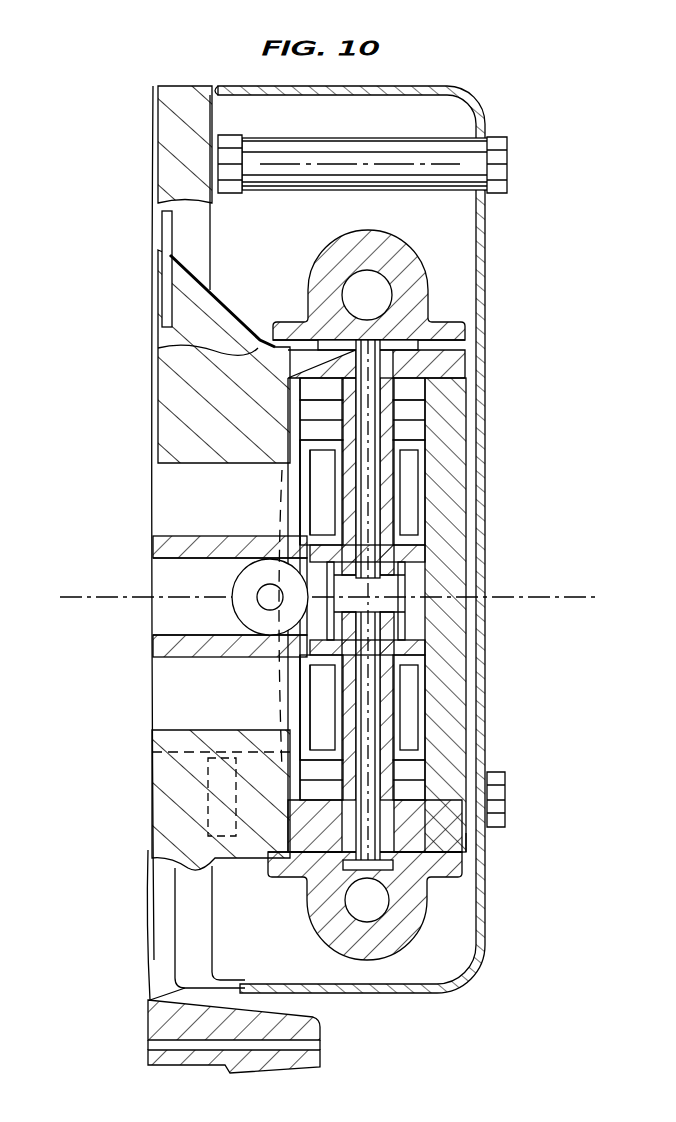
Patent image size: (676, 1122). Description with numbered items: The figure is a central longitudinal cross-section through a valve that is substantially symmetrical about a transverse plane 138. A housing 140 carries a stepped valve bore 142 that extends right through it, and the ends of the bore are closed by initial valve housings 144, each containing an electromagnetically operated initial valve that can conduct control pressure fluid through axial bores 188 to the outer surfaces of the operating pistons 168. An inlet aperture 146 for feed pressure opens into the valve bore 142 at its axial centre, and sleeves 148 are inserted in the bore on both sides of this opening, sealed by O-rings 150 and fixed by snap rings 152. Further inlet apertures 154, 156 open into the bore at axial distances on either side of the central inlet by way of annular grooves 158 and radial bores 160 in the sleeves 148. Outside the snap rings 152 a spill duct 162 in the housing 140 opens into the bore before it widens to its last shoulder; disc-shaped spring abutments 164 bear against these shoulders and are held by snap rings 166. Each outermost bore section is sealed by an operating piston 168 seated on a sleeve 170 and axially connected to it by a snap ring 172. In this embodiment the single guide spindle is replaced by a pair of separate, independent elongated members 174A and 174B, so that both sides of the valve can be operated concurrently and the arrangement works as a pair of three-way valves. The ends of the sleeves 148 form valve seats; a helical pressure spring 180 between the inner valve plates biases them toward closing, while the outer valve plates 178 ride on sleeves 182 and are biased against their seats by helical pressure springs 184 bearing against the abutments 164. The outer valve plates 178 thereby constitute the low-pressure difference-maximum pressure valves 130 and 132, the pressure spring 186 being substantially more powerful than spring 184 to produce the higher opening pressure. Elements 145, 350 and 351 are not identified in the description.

The low-pressure difference-maximum pressure valve 130 is at (300, 778).
The low-pressure difference-maximum pressure valve 132 is at (298, 427).
The transverse plane 138 is at (102, 590).
The housing 140 is at (205, 283).
The valve bore 142 is at (470, 583).
The initial valve housing 144 is at (392, 214).
The guide hole 145 is at (240, 598).
The inlet aperture 146 is at (160, 624).
The sleeve 148 is at (440, 510).
The O-ring 150 is at (420, 480).
The snap ring 152 is at (432, 460).
The inlet aperture 154 is at (160, 712).
The inlet aperture 156 is at (160, 518).
The annular groove 158 is at (305, 478).
The radial bore 160 is at (318, 505).
The spill duct 162 is at (235, 860).
The spring abutment 164 is at (452, 425).
The snap ring 166 is at (435, 410).
The operating piston 168 is at (420, 345).
The sleeve 170 is at (464, 360).
The snap ring 172 is at (397, 338).
The elongated member 174A is at (427, 560).
The elongated member 174B is at (422, 640).
The outer valve plate 178 is at (435, 430).
The helical pressure spring 180 is at (412, 620).
The sleeve 182 is at (397, 510).
The helical pressure spring 184 is at (432, 778).
The pressure spring 186 is at (435, 388).
The axial bore 188 is at (345, 310).
The pin 350 is at (325, 522).
The slot 351 is at (320, 615).